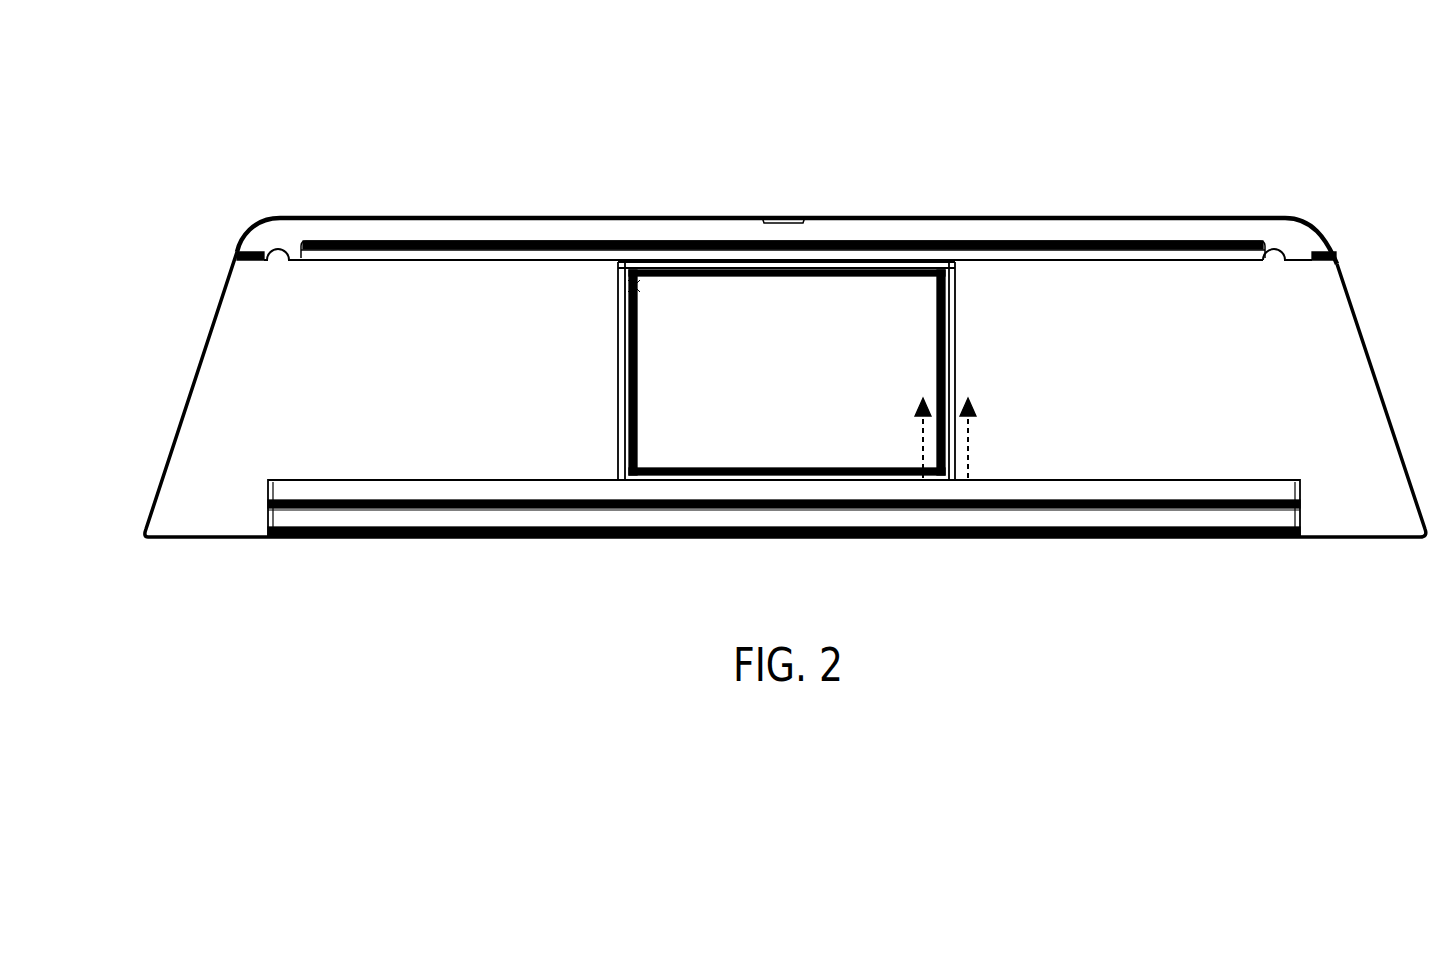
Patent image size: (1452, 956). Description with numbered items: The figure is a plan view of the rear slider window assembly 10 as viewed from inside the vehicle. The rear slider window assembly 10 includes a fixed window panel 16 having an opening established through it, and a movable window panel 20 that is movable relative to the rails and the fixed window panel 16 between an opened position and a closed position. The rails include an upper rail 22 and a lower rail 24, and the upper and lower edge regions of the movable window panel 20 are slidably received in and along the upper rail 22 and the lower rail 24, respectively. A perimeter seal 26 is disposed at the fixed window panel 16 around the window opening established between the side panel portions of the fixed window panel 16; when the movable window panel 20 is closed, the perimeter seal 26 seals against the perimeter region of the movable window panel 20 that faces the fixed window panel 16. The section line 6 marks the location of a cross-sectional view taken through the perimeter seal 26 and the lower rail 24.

The rear slider window assembly 10 is at (785, 323).
The fixed window panel 16 is at (224, 338).
The movable window panel 20 is at (718, 295).
The upper rail 22 is at (509, 253).
The lower rail 24 is at (636, 490).
The perimeter seal 26 is at (741, 317).
The section line 6- 6 is at (946, 429).